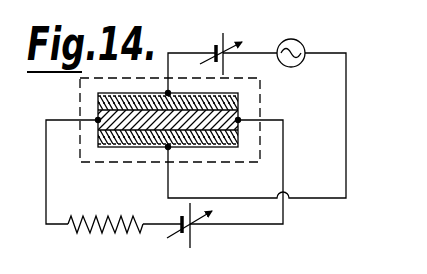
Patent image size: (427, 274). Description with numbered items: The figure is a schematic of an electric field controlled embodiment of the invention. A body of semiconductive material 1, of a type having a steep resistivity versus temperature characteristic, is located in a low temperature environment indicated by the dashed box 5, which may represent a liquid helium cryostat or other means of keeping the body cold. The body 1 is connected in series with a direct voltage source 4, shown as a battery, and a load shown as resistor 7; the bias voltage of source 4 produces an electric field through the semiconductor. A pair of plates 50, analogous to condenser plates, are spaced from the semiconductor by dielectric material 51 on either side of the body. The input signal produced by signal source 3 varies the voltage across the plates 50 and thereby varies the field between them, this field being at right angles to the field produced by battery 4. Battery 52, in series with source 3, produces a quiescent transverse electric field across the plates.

The body of semiconductive material 1 is at (97, 119).
The signal source 3 is at (300, 63).
The direct voltage source 4 is at (181, 208).
The dashed box 5 is at (80, 86).
The resistor 7 is at (108, 196).
The plates 50 is at (238, 94).
The dielectric material 51 is at (238, 104).
The battery 52 is at (223, 70).